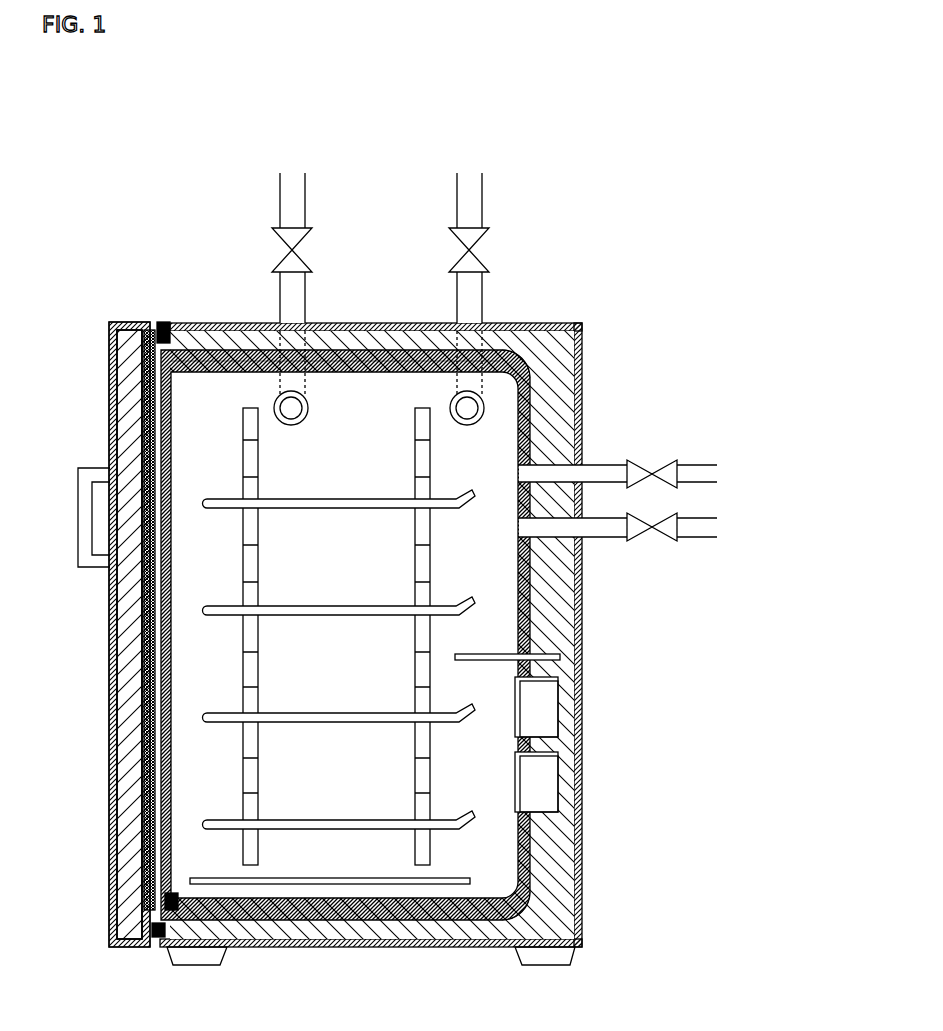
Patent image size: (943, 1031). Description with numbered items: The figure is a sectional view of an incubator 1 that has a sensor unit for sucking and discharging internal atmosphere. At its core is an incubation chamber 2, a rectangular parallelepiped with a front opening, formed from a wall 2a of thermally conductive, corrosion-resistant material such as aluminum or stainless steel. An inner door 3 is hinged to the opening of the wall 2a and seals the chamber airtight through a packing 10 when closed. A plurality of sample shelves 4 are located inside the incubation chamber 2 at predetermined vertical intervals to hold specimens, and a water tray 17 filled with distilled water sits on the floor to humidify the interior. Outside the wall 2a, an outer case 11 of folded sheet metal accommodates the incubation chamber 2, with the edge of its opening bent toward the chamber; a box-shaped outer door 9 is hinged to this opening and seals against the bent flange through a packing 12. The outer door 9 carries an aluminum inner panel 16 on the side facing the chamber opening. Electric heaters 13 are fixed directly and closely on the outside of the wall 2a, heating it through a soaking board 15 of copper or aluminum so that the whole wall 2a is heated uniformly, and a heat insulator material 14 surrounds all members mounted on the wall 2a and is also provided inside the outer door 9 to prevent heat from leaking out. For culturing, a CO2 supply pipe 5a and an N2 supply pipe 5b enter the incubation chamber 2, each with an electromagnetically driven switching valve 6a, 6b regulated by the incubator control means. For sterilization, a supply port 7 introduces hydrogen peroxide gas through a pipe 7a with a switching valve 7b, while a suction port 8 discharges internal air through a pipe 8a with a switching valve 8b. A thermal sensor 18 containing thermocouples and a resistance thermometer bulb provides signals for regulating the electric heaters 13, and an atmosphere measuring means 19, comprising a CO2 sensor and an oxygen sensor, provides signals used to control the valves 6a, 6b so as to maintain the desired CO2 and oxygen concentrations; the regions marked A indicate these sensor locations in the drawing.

The incubator 1 is at (367, 108).
The incubation chamber 2 is at (213, 637).
The wall 2a is at (345, 375).
The inner door 3 is at (166, 412).
The sample shelves 4 is at (230, 498).
The CO2 supply pipe 5a is at (705, 470).
The N2 supply pipe 5b is at (705, 530).
The switching valve 6a is at (637, 470).
The switching valve 6b is at (640, 530).
The supply port 7 is at (466, 425).
The pipe 7a is at (470, 312).
The switching valve 7b is at (470, 250).
The suction port 8 is at (291, 425).
The pipe 8a is at (293, 312).
The switching valve 8b is at (293, 250).
The outer door 9 is at (107, 580).
The packing 10 is at (160, 362).
The outer case 11 is at (187, 328).
The packing 12 is at (160, 345).
The electric heaters 13 is at (262, 335).
The heat insulator material 14 is at (583, 343).
The soaking board 15 is at (525, 380).
The inner panel 16 is at (148, 840).
The water tray 17 is at (277, 893).
The thermal sensor 18 is at (560, 655).
The atmosphere measuring means 19 is at (548, 725).
The region A is at (548, 692).